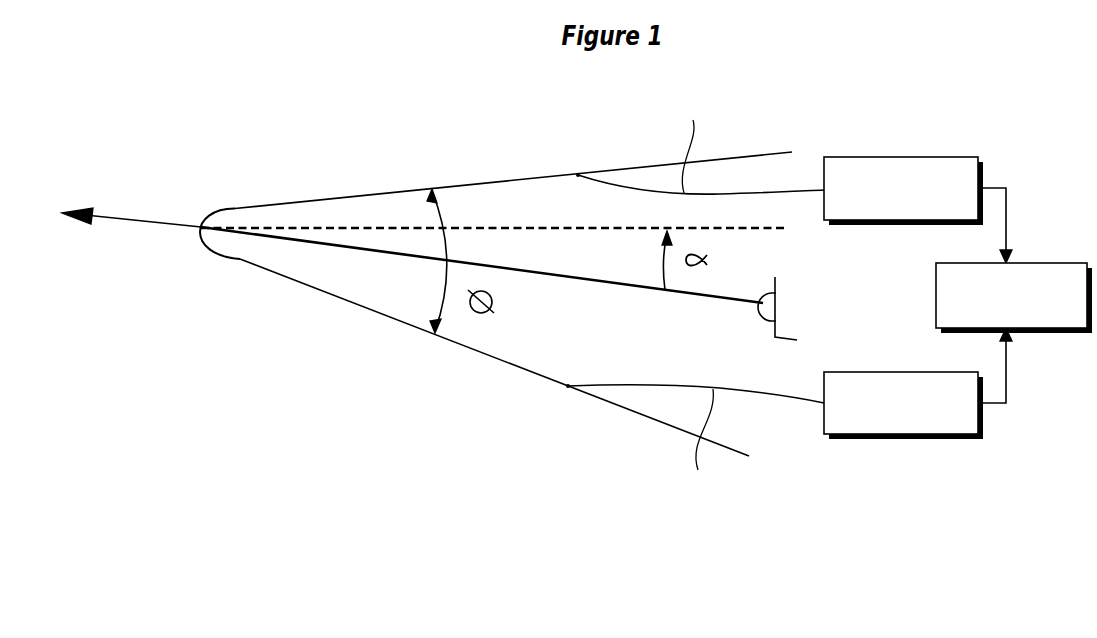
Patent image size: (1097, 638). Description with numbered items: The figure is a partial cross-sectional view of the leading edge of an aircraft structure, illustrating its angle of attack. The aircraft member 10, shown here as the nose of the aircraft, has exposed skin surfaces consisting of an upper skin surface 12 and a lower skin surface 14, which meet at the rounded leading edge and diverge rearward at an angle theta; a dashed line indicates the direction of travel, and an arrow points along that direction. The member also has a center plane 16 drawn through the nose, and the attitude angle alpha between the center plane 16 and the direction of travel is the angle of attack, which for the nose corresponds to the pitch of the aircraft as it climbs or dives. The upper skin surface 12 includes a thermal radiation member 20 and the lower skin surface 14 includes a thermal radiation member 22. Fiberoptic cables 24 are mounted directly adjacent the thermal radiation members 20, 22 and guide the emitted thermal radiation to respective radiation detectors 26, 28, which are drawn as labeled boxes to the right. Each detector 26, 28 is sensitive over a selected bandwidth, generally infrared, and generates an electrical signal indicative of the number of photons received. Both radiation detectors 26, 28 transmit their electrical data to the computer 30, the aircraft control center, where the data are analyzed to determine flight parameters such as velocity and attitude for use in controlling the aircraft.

The aircraft member 10 is at (345, 146).
The upper skin surface 12 is at (466, 184).
The lower skin surface 14 is at (472, 350).
The center plane 16 is at (668, 293).
The thermal radiation member 20 is at (578, 174).
The thermal radiation member 22 is at (568, 388).
The fiberoptic cable 24 is at (808, 190).
The radiation detector 26 is at (962, 157).
The radiation detector 28 is at (943, 438).
The computer 30 is at (1050, 333).